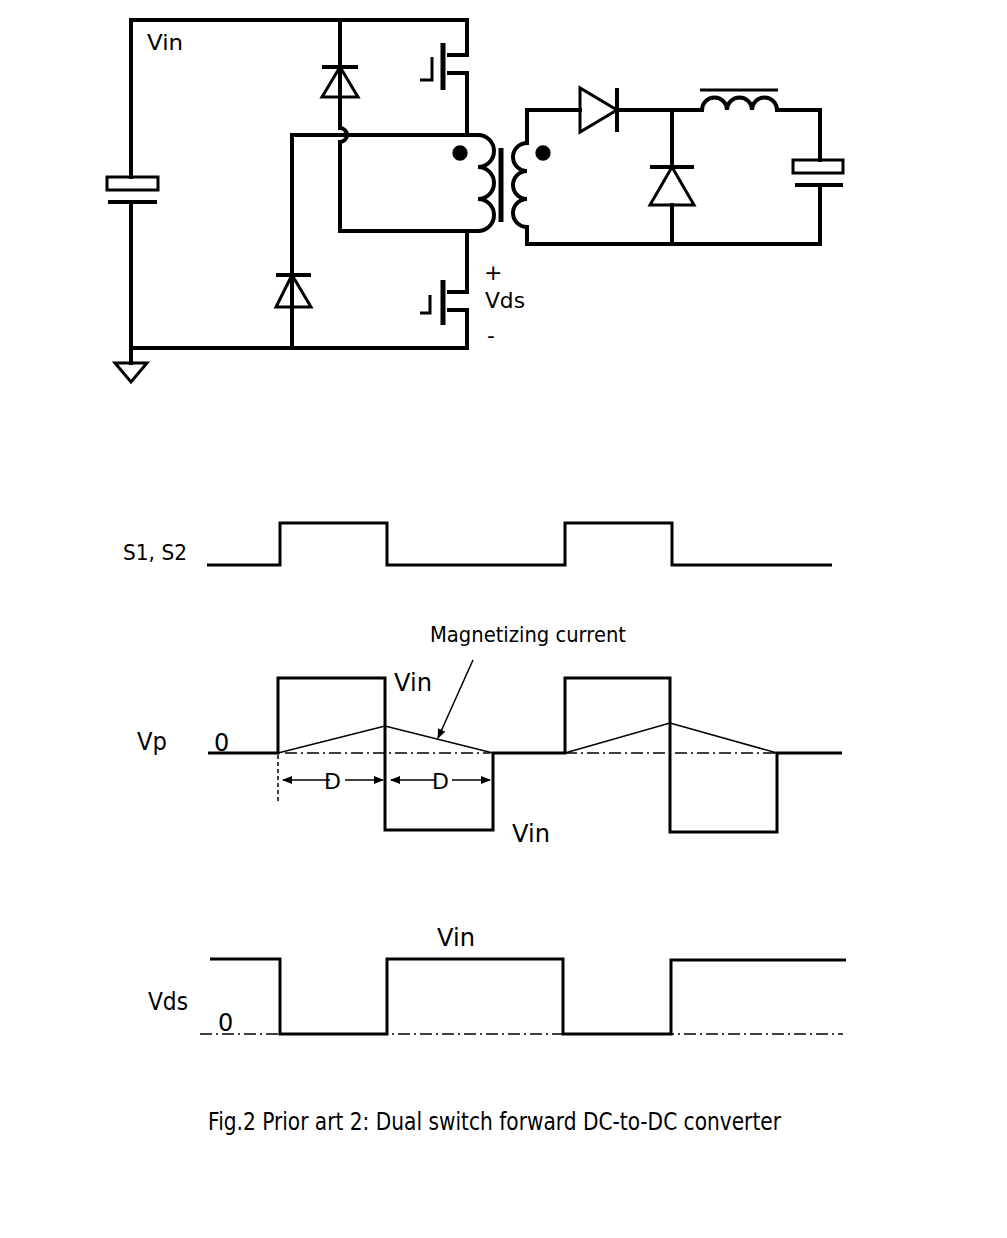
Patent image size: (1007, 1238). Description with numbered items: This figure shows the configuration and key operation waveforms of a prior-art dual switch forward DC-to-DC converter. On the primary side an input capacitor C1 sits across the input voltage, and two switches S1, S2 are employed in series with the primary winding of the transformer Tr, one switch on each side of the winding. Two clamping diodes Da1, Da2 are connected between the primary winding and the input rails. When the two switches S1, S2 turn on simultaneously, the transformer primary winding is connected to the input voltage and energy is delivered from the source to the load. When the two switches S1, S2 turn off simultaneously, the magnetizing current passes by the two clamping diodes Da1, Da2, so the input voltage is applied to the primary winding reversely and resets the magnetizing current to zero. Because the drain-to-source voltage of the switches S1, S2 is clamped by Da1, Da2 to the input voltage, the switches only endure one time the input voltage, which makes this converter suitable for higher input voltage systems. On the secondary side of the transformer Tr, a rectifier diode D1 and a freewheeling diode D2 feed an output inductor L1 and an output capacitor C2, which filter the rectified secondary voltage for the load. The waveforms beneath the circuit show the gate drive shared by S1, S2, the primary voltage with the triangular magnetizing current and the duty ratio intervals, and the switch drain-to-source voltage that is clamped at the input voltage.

The input capacitor C1 is at (103, 201).
The clamping diode Da1 is at (280, 75).
The clamping diode Da2 is at (257, 291).
The first switch S1 is at (424, 66).
The second switch S2 is at (423, 301).
The transformer Tr is at (484, 157).
The rectifier diode D1 is at (592, 92).
The freewheeling diode D2 is at (644, 189).
The output inductor L1 is at (739, 84).
The output capacitor C2 is at (835, 153).